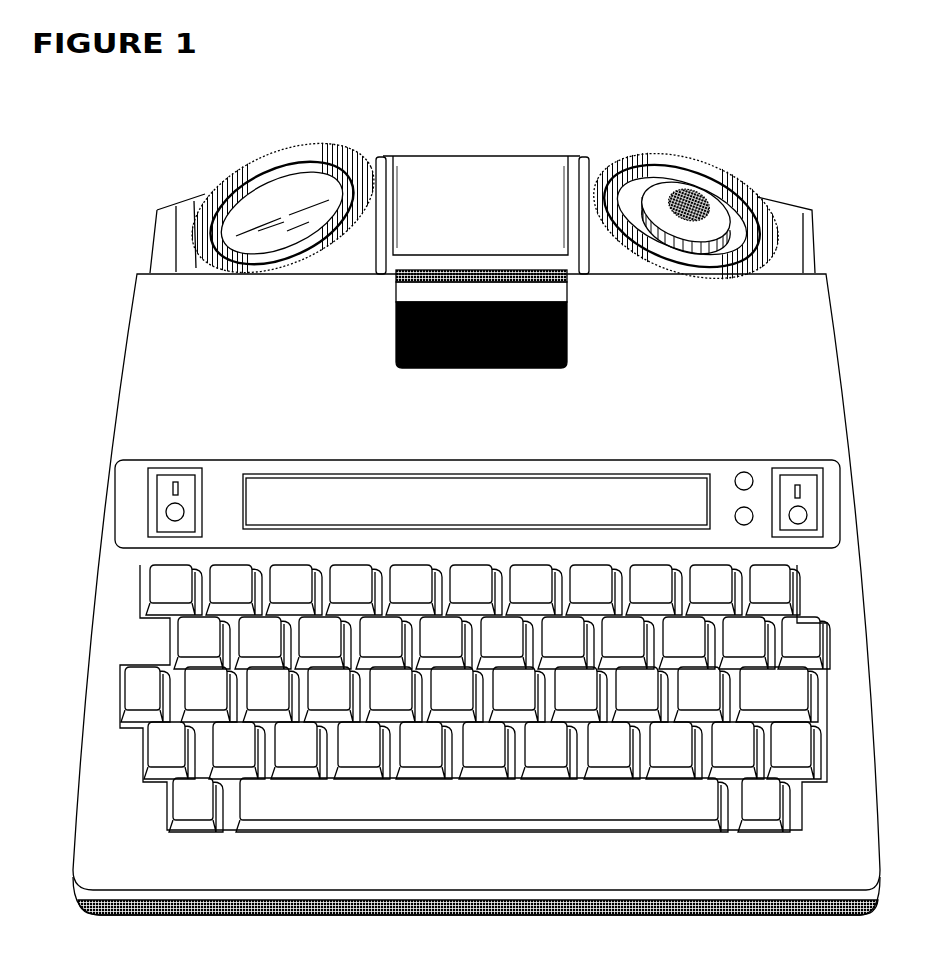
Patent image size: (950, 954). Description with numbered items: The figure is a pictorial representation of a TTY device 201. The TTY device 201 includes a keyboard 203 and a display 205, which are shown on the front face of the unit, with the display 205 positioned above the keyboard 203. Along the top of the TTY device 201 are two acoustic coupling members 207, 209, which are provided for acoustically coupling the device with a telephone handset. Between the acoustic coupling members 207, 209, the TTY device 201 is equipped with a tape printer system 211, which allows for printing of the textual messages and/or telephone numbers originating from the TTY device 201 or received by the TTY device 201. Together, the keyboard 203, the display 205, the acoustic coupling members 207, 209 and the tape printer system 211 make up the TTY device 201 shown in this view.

The TTY device 201 is at (263, 366).
The keyboard 203 is at (250, 650).
The display 205 is at (282, 470).
The acoustic coupling member 207 is at (288, 212).
The acoustic coupling member 209 is at (692, 202).
The tape printer system 211 is at (473, 192).